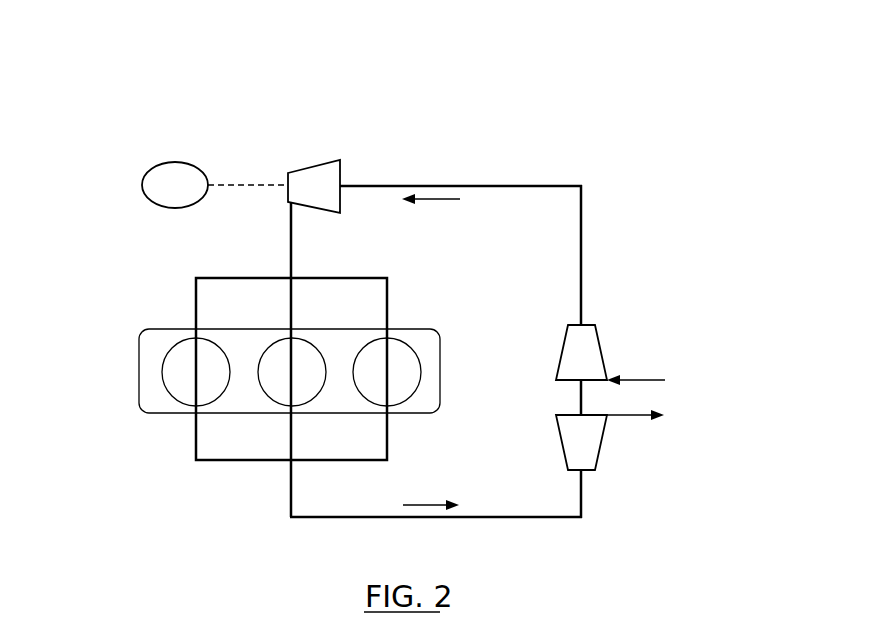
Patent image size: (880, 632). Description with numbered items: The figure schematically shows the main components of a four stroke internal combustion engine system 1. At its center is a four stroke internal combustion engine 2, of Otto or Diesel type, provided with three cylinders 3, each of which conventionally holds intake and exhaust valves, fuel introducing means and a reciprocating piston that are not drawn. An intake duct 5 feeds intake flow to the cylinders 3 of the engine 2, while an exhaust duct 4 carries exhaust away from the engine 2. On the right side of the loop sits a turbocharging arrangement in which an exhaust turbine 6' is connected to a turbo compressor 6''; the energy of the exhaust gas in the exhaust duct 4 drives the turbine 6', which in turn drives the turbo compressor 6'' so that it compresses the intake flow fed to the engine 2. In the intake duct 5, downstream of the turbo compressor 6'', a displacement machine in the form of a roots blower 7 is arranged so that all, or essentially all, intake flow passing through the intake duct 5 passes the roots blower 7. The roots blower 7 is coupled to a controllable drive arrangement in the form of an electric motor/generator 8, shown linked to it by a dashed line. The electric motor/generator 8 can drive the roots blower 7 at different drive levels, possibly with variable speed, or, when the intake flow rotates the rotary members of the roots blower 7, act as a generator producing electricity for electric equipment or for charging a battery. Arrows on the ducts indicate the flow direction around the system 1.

The internal combustion engine system 1 is at (184, 506).
The four stroke internal combustion engine 2 is at (148, 392).
The cylinder 3 is at (192, 352).
The exhaust duct 4 is at (497, 517).
The intake duct 5 is at (508, 186).
The exhaust turbine 6' is at (643, 474).
The turbo compressor 6'' is at (645, 325).
The roots blower 7 is at (317, 170).
The electric motor/generator 8 is at (157, 172).